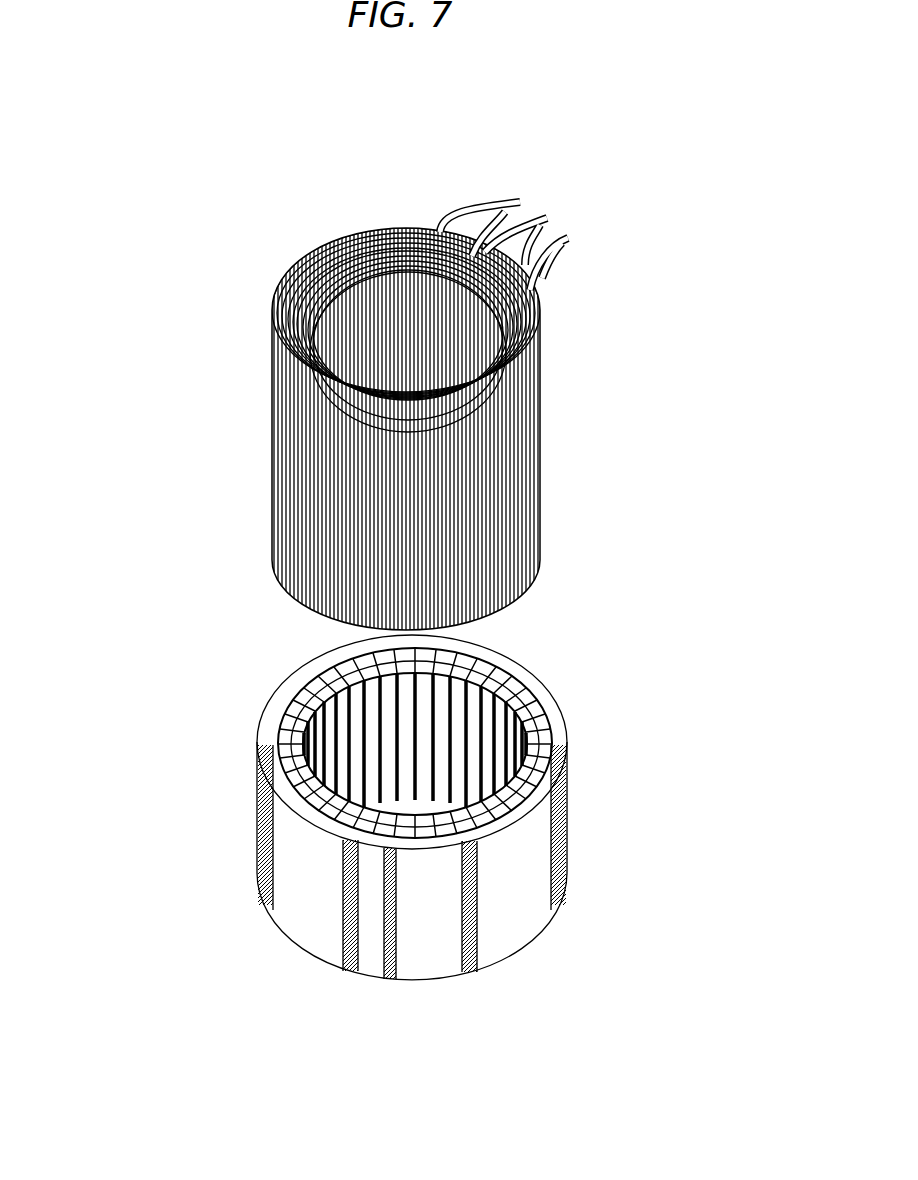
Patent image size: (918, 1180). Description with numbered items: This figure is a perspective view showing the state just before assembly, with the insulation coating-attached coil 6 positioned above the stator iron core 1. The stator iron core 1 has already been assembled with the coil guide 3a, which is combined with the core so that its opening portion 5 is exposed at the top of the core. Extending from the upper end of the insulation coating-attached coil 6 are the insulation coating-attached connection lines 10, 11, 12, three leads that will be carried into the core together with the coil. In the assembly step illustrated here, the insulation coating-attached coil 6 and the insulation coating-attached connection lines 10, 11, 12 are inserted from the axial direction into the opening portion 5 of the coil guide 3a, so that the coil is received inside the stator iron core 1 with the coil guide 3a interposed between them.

The stator iron core 1 is at (533, 857).
The coil guide 3a is at (273, 730).
The opening portion 5 is at (498, 668).
The insulation coating-attached coil 6 is at (273, 322).
The insulation coating-attached connection line 10 is at (503, 204).
The insulation coating-attached connection line 11 is at (538, 220).
The insulation coating-attached connection line 12 is at (563, 237).